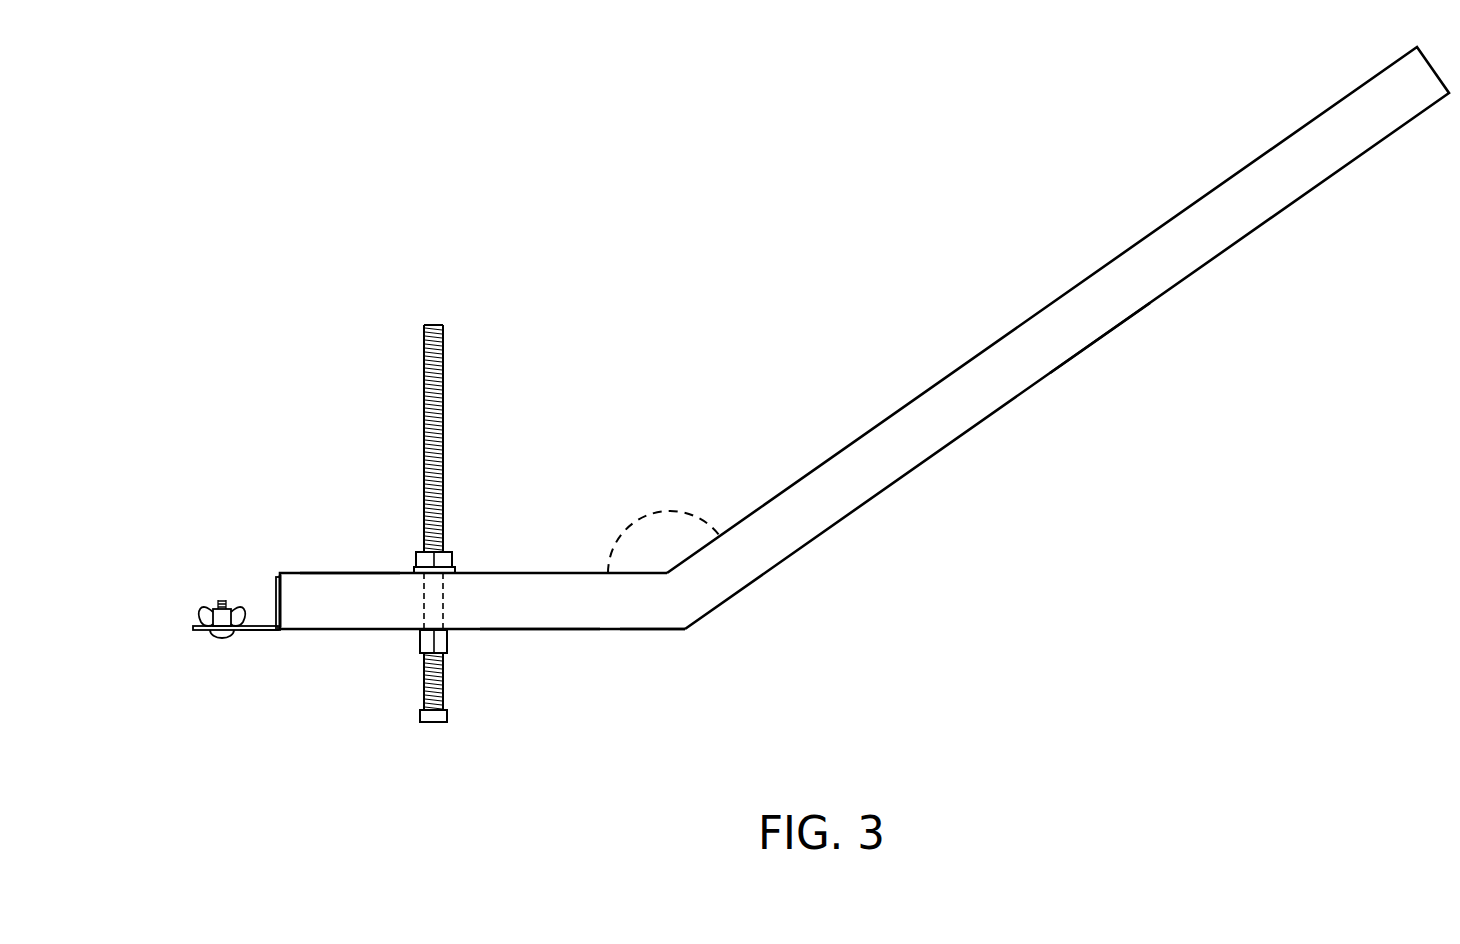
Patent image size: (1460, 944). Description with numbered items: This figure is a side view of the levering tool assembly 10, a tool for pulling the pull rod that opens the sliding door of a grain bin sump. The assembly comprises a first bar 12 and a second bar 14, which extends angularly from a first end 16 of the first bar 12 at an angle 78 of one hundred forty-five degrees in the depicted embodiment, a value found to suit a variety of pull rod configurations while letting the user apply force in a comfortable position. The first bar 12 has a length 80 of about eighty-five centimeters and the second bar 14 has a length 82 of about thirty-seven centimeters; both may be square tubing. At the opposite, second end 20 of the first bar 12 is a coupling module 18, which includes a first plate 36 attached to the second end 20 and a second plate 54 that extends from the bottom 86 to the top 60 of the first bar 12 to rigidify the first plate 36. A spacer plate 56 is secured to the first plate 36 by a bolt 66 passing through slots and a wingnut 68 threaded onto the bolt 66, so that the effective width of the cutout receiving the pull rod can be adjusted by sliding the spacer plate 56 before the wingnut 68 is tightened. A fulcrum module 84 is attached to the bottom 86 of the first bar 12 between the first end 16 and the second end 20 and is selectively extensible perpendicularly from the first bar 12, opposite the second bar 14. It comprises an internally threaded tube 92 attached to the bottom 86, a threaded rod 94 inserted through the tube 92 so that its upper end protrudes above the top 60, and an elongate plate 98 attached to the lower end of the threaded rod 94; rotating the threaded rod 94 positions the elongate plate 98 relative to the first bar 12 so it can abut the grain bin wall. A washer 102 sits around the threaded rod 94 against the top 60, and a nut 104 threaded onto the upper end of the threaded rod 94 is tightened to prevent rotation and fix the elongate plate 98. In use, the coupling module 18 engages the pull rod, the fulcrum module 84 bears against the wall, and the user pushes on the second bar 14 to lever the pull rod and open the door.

The levering tool assembly 10 is at (725, 197).
The first bar 12 is at (593, 655).
The second bar 14 is at (1088, 243).
The first end 16 is at (675, 598).
The coupling module 18 is at (170, 528).
The second end 20 is at (283, 593).
The first plate 36 is at (263, 630).
The second plate 54 is at (278, 578).
The spacer plates 56 is at (200, 632).
The top 60 is at (350, 573).
The bolt 66 is at (224, 605).
The wingnut 68 is at (208, 612).
The angle 78 is at (652, 488).
The length 80 is at (538, 652).
The length 82 is at (1115, 355).
The fulcrum module 84 is at (485, 438).
The bottom 86 is at (635, 630).
The tube 92 is at (420, 640).
The threaded rod 94 is at (433, 460).
The elongate plate 98 is at (433, 722).
The washer 102 is at (455, 570).
The nut 104 is at (450, 553).